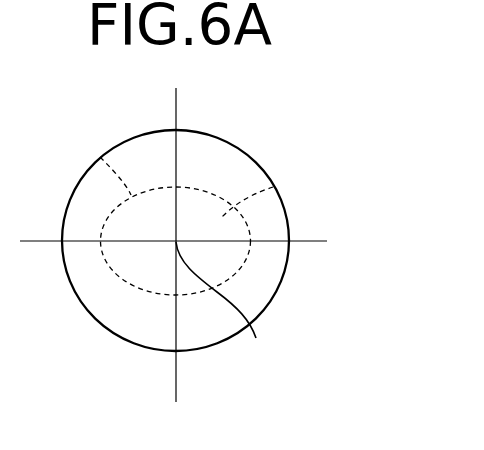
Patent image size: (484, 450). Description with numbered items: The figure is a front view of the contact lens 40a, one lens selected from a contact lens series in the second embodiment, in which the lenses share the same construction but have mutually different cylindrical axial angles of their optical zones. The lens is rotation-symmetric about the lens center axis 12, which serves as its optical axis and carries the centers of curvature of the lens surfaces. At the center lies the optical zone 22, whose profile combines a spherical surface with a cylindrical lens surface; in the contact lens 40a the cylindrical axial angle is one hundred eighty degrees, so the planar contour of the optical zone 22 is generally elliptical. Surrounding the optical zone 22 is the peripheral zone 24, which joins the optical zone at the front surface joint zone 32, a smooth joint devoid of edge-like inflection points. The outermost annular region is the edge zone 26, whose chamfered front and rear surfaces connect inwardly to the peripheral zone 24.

The edge zone 26 is at (215, 135).
The peripheral zone 24 is at (237, 174).
The optical zone 22 is at (273, 187).
The front surface joint zone 32 is at (100, 157).
The lens center axis 12 is at (256, 338).
The contact lens 40a is at (337, 98).